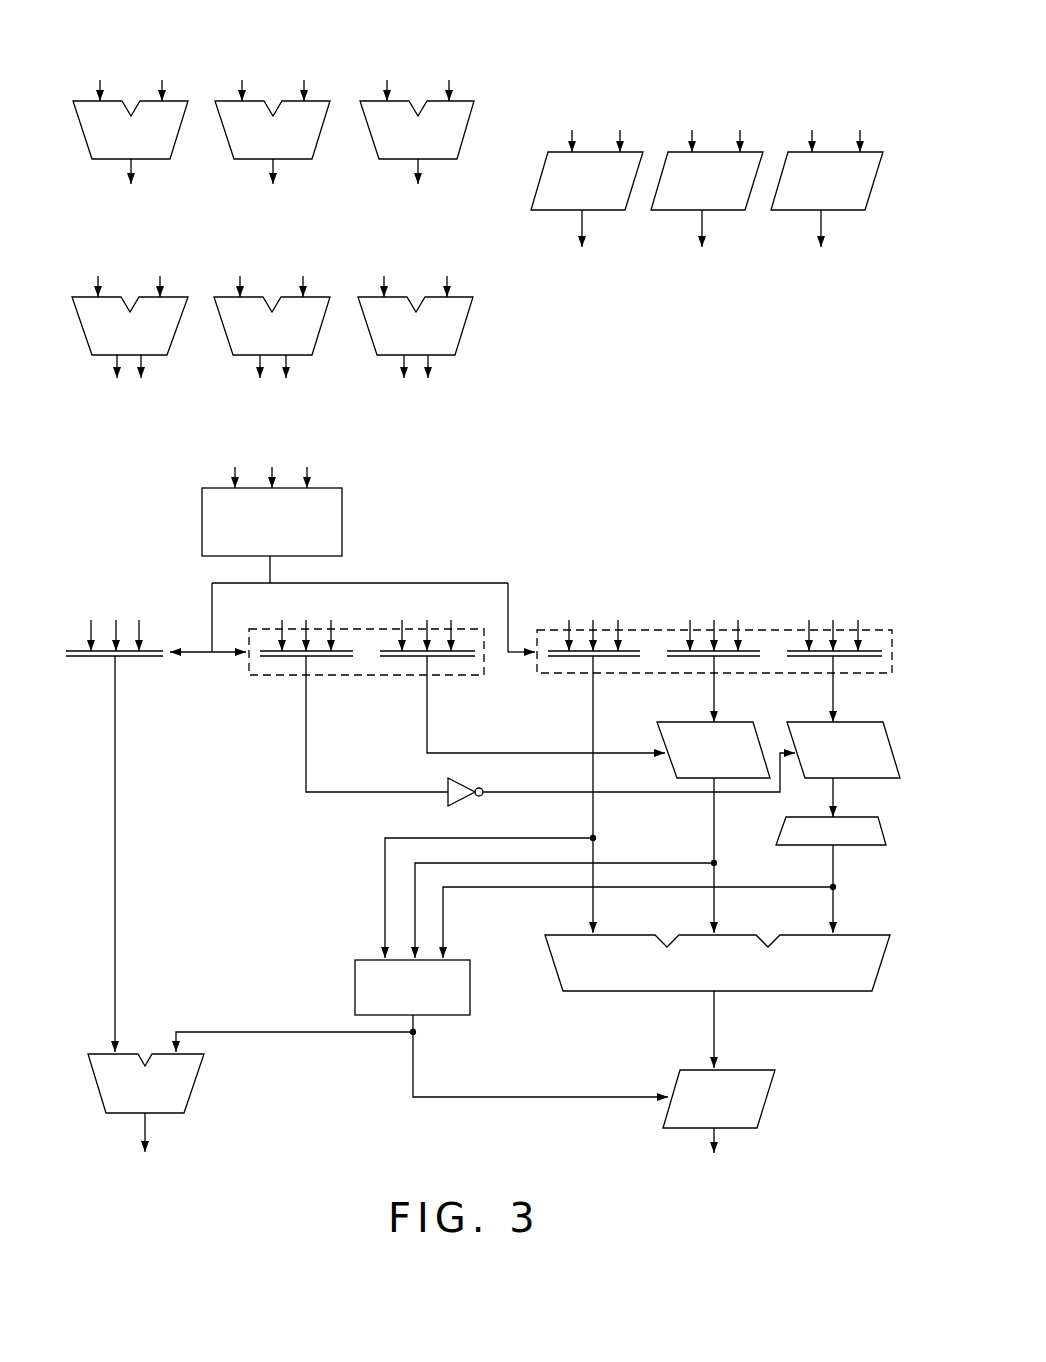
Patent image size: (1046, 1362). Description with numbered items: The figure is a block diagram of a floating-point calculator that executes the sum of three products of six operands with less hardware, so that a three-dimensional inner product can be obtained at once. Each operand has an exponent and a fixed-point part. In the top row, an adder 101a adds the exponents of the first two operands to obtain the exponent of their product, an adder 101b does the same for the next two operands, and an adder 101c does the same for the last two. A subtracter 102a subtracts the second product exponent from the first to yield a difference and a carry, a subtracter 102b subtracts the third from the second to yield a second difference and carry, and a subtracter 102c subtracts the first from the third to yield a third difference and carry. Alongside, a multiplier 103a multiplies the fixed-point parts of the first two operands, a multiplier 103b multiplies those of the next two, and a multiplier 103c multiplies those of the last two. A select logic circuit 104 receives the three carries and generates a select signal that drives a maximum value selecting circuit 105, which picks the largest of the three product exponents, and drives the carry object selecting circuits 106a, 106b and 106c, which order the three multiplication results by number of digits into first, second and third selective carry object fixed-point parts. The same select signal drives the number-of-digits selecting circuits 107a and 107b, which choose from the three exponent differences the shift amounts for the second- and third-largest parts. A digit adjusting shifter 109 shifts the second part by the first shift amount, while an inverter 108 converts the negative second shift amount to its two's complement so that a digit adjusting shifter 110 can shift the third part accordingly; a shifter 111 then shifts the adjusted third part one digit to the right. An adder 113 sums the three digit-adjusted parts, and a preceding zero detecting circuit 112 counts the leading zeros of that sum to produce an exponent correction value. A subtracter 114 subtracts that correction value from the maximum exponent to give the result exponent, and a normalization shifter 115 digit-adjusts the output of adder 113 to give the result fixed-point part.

The adder 101a is at (175, 145).
The adder 101b is at (317, 145).
The adder 101c is at (462, 145).
The subtracter 102a is at (172, 337).
The subtracter 102b is at (316, 337).
The subtracter 102c is at (462, 337).
The multiplier 103a is at (546, 213).
The multiplier 103b is at (666, 213).
The multiplier 103c is at (786, 213).
The select logic circuit 104 is at (342, 513).
The maximum value selecting circuit 105 is at (80, 663).
The carry object selecting circuit 106a is at (565, 663).
The carry object selecting circuit 106b is at (683, 663).
The carry object selecting circuit 106c is at (805, 663).
The number-of-digits selecting circuit 107a is at (399, 663).
The number-of-digits selecting circuit 107b is at (277, 663).
The inverter 108 is at (466, 800).
The digit adjusting shifter 109 is at (672, 762).
The digit adjusting shifter 110 is at (805, 778).
The shifter 111 is at (790, 846).
The preceding zero detecting circuit 112 is at (470, 997).
The adder 113 is at (627, 993).
The subtracter 114 is at (192, 1092).
The normalization shifter 115 is at (765, 1105).